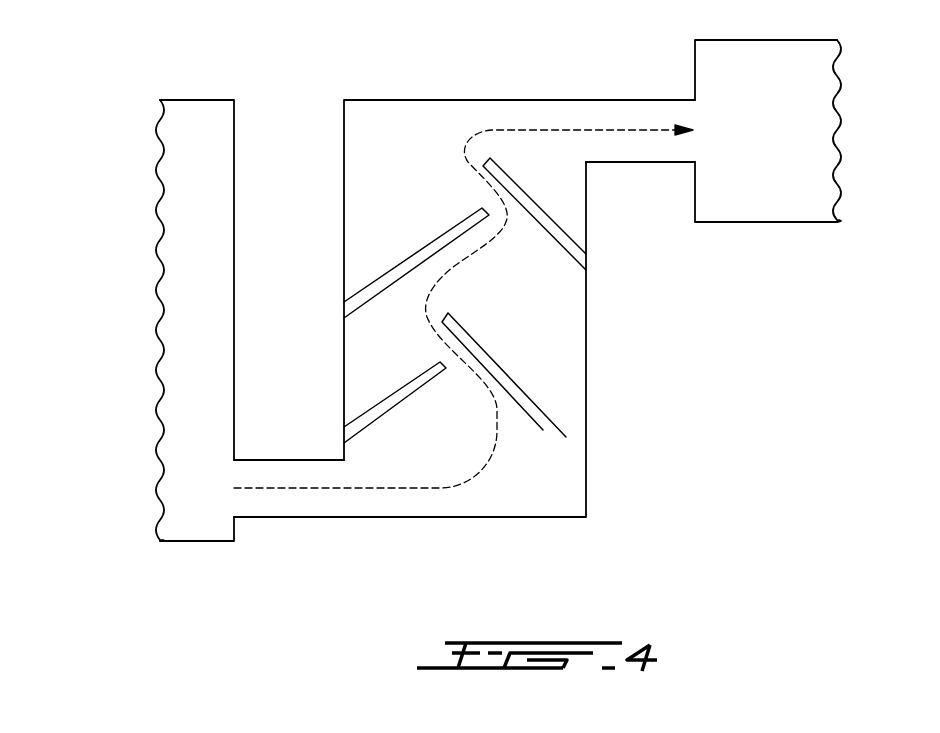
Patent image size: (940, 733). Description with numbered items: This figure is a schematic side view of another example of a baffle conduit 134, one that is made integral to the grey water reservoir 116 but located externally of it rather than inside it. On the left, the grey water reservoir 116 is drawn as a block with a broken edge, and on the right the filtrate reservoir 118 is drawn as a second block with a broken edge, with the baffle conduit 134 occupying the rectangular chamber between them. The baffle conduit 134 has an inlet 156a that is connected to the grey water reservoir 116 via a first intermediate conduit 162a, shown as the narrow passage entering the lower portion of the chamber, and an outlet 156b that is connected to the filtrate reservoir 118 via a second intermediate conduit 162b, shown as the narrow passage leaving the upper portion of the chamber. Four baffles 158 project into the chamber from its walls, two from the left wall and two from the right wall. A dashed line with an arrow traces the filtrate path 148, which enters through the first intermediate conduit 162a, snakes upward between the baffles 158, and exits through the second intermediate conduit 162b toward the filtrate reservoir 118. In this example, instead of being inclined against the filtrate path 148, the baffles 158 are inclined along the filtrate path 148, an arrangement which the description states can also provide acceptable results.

The grey water reservoir 116 is at (212, 228).
The filtrate reservoir 118 is at (802, 137).
The baffle conduit 134 is at (586, 367).
The filtrate path 148 is at (568, 127).
The inlet 156a is at (347, 498).
The outlet 156b is at (587, 143).
The baffles 158 is at (387, 281).
The first intermediate conduit 162a is at (278, 500).
The second intermediate conduit 162b is at (648, 122).